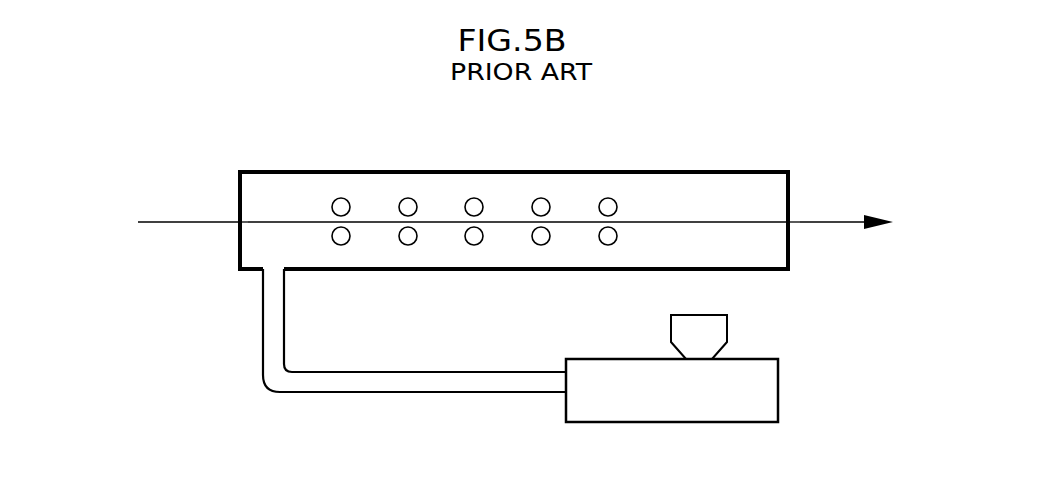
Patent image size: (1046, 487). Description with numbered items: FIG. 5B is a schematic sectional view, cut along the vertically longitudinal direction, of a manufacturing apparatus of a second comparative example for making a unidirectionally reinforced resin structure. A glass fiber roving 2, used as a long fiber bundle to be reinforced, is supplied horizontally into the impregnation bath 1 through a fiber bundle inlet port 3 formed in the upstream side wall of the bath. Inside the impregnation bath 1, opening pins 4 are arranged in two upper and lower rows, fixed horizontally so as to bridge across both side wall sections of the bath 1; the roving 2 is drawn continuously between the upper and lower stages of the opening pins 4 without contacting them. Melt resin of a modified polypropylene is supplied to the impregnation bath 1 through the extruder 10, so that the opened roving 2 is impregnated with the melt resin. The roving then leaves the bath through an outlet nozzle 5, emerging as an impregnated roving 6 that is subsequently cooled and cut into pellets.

The impregnation bath 1 is at (510, 166).
The glass fiber roving 2 is at (180, 222).
The fiber bundle inlet port 3 is at (240, 222).
The opening pin 4 is at (350, 211).
The outlet nozzle 5 is at (790, 222).
The impregnated roving 6 is at (848, 222).
The extruder 10 is at (758, 368).